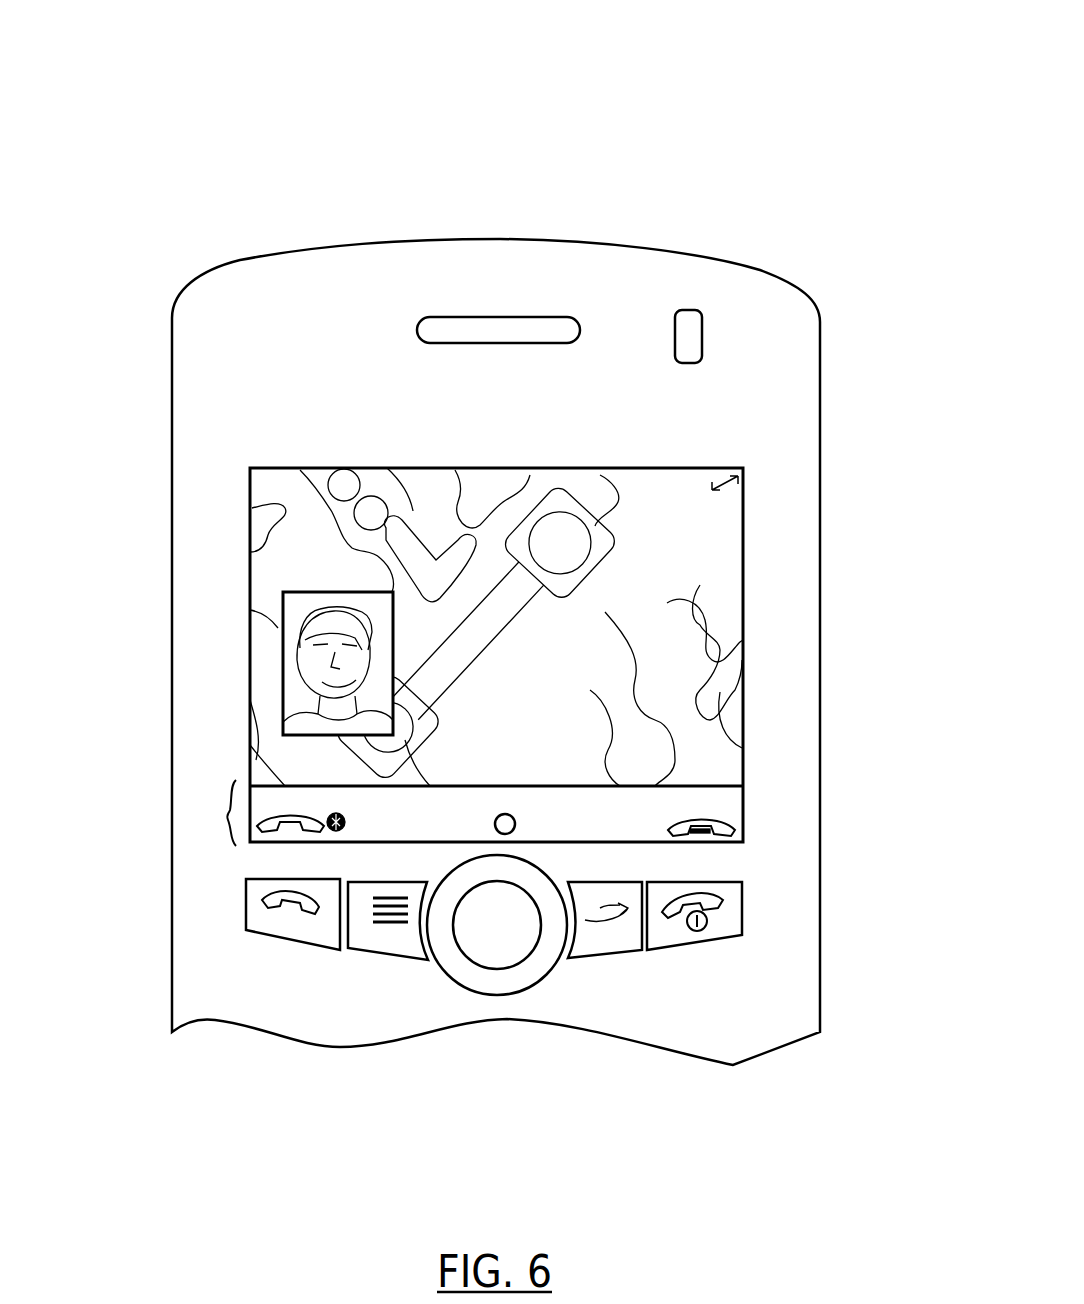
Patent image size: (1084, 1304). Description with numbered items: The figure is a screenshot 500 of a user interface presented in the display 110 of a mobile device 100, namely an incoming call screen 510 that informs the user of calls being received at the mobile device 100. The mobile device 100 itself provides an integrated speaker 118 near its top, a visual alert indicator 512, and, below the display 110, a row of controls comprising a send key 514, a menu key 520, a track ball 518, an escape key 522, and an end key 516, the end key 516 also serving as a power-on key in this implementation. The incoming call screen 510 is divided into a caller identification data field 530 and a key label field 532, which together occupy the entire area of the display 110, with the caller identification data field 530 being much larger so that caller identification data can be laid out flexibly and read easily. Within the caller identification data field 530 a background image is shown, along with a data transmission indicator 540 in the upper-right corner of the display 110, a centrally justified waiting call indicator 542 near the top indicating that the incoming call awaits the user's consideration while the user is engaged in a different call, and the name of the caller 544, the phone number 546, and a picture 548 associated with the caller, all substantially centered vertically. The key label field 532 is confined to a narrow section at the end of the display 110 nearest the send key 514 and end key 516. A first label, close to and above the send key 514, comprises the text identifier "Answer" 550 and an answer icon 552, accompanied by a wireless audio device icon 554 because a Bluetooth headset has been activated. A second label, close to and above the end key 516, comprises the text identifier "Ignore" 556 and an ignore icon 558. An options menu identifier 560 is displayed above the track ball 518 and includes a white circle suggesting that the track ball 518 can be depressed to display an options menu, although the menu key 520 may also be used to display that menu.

The screenshot 500 is at (697, 76).
The mobile device 100 is at (425, 236).
The integrated speaker 118 is at (430, 328).
The incoming call screen 510 is at (534, 465).
The visual alert indicator 512 is at (692, 327).
The data transmission indicator 540 is at (743, 468).
The waiting call indicator 542 is at (412, 505).
The name of the caller 544 is at (432, 613).
The phone number 546 is at (668, 680).
The picture 548 is at (295, 677).
The caller identification data field 530 is at (717, 585).
The display 110 is at (750, 632).
The key label field 532 is at (222, 812).
The text identifier "Answer" 550 is at (285, 786).
The answer icon 552 is at (266, 840).
The wireless audio device icon 554 is at (320, 836).
The options menu identifier 560 is at (502, 786).
The text identifier "Ignore" 556 is at (708, 797).
The ignore icon 558 is at (712, 835).
The send key 514 is at (258, 912).
The menu key 520 is at (390, 940).
The track ball 518 is at (495, 978).
The escape key 522 is at (595, 945).
The end key 516 is at (732, 918).